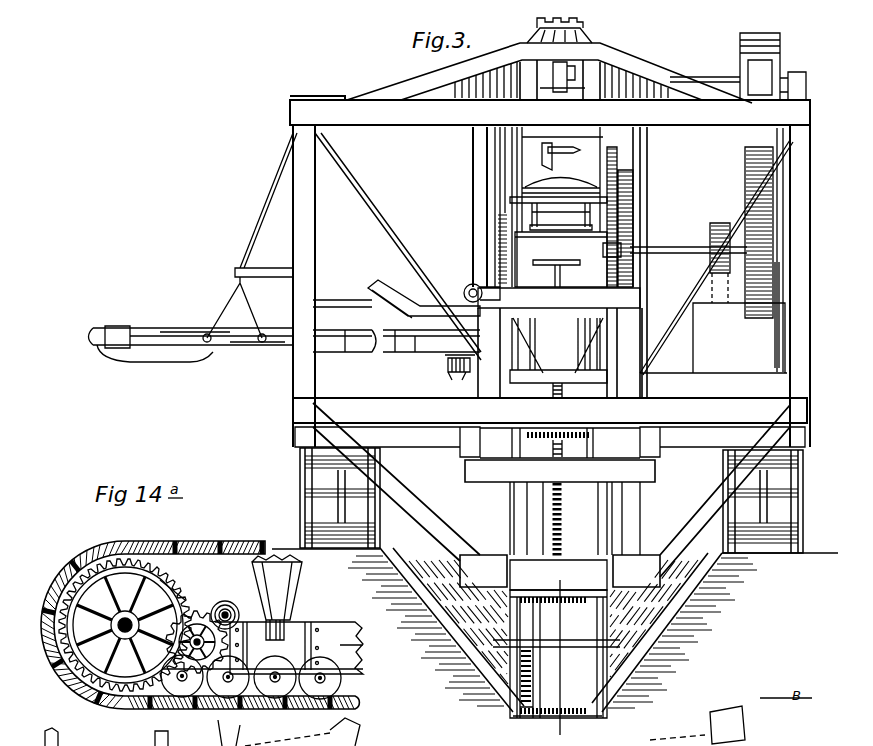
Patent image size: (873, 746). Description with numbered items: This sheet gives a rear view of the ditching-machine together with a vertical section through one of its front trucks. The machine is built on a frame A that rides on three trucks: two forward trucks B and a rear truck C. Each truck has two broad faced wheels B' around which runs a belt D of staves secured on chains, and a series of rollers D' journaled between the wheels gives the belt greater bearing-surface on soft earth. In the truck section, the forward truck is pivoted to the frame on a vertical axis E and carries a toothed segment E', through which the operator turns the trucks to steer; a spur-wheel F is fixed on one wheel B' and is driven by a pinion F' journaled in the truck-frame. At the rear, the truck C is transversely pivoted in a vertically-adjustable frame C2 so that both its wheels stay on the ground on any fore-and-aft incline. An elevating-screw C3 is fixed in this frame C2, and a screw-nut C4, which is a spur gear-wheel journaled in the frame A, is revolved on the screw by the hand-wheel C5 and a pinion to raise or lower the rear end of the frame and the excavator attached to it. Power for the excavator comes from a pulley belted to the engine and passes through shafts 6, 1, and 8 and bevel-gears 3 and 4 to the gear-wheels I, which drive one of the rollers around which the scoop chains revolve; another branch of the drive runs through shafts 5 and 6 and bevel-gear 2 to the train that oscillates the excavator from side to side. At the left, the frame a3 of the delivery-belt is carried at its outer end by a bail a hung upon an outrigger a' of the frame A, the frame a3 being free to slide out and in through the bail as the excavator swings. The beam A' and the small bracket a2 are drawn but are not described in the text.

In FIG. 3, the shaft 1 is at (760, 66).
In FIG. 3, the bevel-gear 2 is at (808, 56).
In FIG. 3, the bevel-gear 3 is at (568, 62).
In FIG. 3, the bevel-gear 4 is at (540, 156).
In FIG. 3, the shaft 5 is at (788, 344).
In FIG. 3, the shaft 6 is at (718, 78).
In FIG. 3, the shaft 8 is at (569, 149).
In FIG. 3, the gear-wheels I is at (645, 262).
In FIG. 3, the frame A is at (550, 410).
In FIG. 3, the cross head beam A' is at (552, 296).
In FIG. 3, the forward truck B is at (550, 500).
In FIG. 14A, the forward truck B is at (200, 625).
In FIG. 3, the rear truck C is at (556, 663).
In FIG. 3, the vertically-adjustable frame C2 is at (539, 589).
In FIG. 3, the elevating-screw C3 is at (543, 520).
In FIG. 3, the screw-nut C4 is at (571, 421).
In FIG. 3, the hand-wheel C5 is at (561, 259).
In FIG. 3, the bail a is at (191, 319).
In FIG. 3, the outrigger a' is at (266, 205).
In FIG. 3, the conveyor bracket a2 is at (458, 373).
In FIG. 3, the frame of the delivery-belt a3 is at (396, 341).
In FIG. 14A, the broad faced wheels B' is at (182, 584).
In FIG. 14A, the belt D is at (196, 540).
In FIG. 14A, the rollers D' is at (241, 711).
In FIG. 14A, the vertical axis E is at (280, 597).
In FIG. 14A, the toothed segment E' is at (251, 677).
In FIG. 14A, the spur-wheel F is at (125, 625).
In FIG. 14A, the pinion F' is at (224, 609).